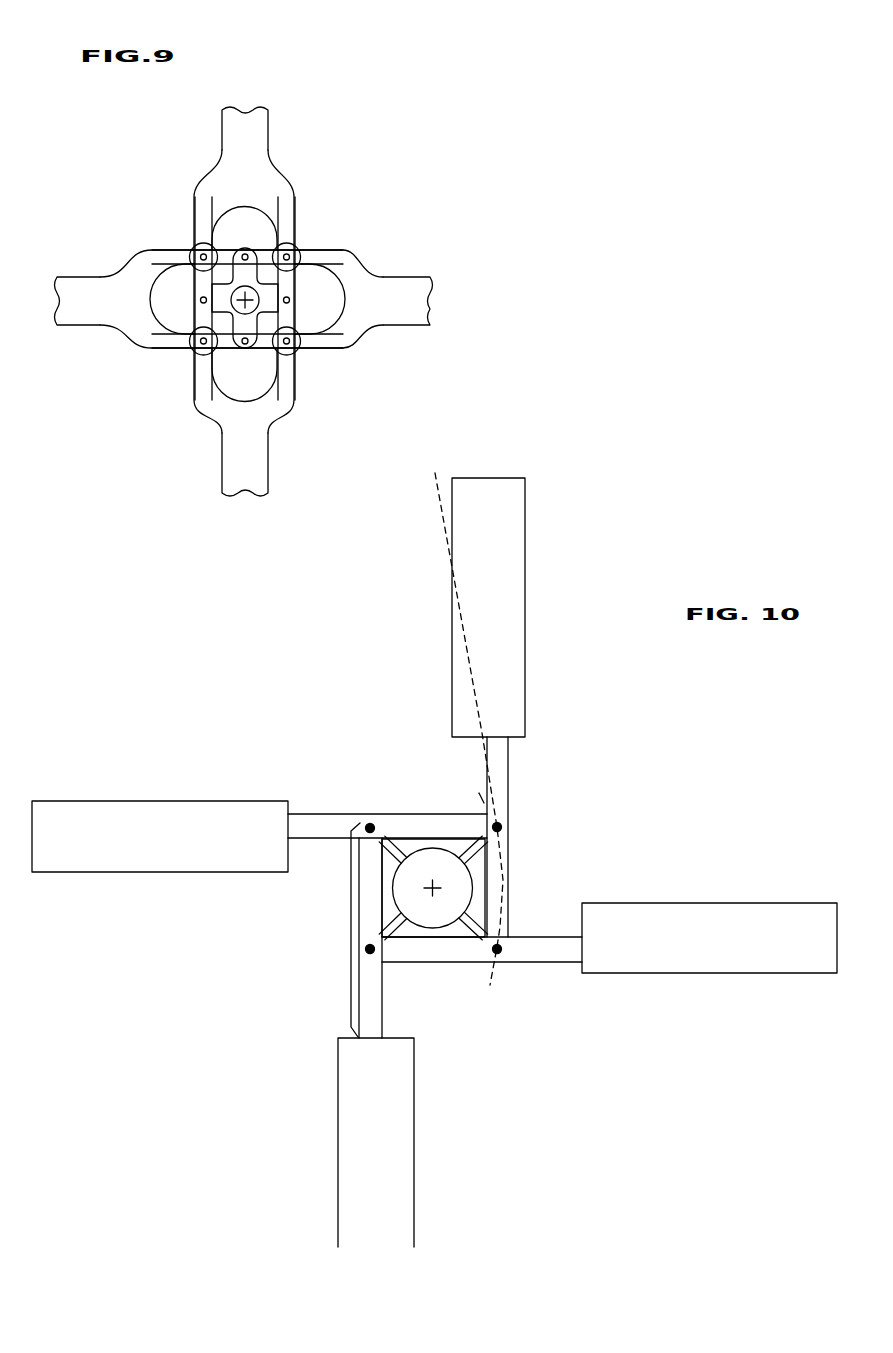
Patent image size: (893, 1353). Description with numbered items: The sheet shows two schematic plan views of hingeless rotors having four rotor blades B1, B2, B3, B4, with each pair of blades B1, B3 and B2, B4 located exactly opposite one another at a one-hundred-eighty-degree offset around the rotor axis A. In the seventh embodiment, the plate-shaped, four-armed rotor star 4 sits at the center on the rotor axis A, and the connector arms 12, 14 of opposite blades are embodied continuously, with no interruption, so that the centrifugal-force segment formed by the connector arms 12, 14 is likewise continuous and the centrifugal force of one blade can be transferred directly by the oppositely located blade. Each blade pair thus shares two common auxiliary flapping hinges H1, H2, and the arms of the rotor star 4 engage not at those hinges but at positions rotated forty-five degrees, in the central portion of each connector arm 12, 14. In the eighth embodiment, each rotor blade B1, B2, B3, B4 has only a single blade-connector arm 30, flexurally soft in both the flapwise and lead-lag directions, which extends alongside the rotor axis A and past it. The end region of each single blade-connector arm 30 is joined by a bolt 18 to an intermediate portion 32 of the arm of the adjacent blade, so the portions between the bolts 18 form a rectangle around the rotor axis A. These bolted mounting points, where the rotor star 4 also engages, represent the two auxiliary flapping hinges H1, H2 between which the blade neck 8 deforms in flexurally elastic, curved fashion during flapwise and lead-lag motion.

In FIG. 9, the rotor star 4 is at (239, 323).
In FIG. 10, the rotor star 4 is at (410, 843).
In FIG. 10, the blade neck 8 is at (352, 955).
In FIG. 9, the connector arm 12 is at (283, 211).
In FIG. 9, the connector arm 14 is at (203, 228).
In FIG. 10, the bolt 18 is at (370, 827).
In FIG. 10, the single blade-connector arm 30 is at (317, 822).
In FIG. 10, the intermediate portion 32 is at (388, 815).
In FIG. 9, the rotor axis A is at (254, 297).
In FIG. 10, the rotor axis A is at (437, 888).
In FIG. 9, the auxiliary flapping hinge H1 is at (195, 252).
In FIG. 10, the auxiliary flapping hinge H1 is at (502, 957).
In FIG. 9, the auxiliary flapping hinge H2 is at (192, 353).
In FIG. 10, the auxiliary flapping hinge H2 is at (370, 950).
In FIG. 9, the rotor blade B1 is at (418, 291).
In FIG. 10, the rotor blade B1 is at (698, 947).
In FIG. 9, the rotor blade B2 is at (259, 474).
In FIG. 10, the rotor blade B2 is at (363, 1109).
In FIG. 9, the rotor blade B3 is at (65, 291).
In FIG. 10, the rotor blade B3 is at (173, 860).
In FIG. 9, the rotor blade B4 is at (258, 115).
In FIG. 10, the rotor blade B4 is at (505, 660).